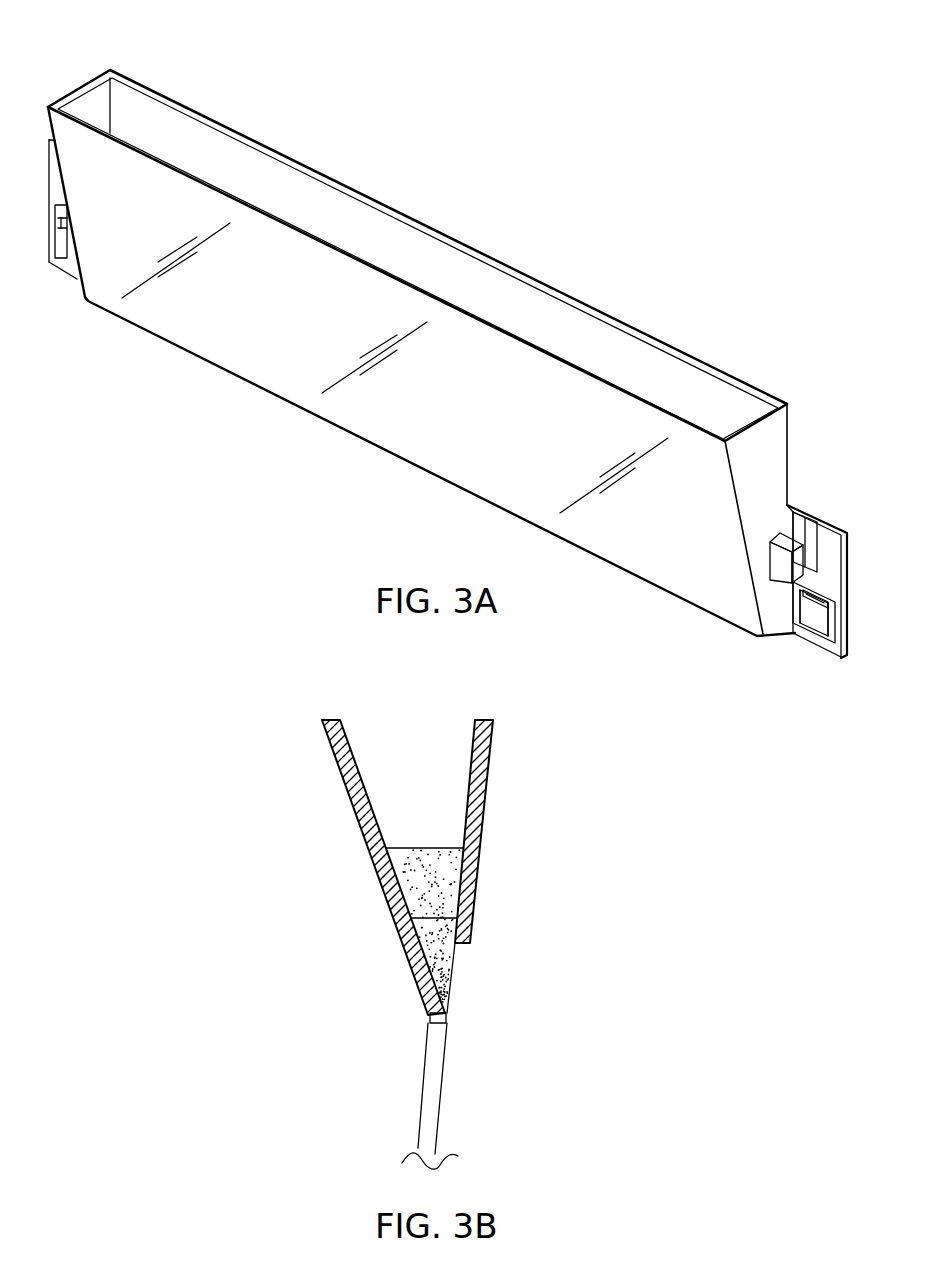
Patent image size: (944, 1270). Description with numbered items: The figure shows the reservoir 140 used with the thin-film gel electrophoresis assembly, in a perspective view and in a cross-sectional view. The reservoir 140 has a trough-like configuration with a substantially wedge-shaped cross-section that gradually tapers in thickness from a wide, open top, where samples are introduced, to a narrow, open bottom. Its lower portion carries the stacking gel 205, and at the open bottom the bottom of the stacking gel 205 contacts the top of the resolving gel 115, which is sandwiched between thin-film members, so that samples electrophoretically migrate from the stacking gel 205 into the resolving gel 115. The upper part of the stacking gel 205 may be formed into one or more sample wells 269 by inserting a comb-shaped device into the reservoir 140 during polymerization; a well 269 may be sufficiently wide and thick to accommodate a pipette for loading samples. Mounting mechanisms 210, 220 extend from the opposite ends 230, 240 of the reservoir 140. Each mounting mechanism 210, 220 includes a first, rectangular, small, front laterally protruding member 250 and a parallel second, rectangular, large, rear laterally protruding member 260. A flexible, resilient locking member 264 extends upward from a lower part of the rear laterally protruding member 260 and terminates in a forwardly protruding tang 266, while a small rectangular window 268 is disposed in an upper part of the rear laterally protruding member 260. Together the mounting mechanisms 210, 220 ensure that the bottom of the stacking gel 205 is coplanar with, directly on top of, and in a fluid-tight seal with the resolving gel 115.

In FIG. 3A, the reservoir 140 is at (156, 64).
In FIG. 3B, the reservoir 140 is at (492, 740).
In FIG. 3A, the end of reservoir 240 is at (778, 432).
In FIG. 3A, the mounting mechanism 210 is at (41, 332).
In FIG. 3A, the end of reservoir 230 is at (85, 298).
In FIG. 3A, the mounting mechanism 220 is at (783, 597).
In FIG. 3A, the rear laterally protruding member 260 is at (845, 532).
In FIG. 3A, the rectangular window 268 is at (807, 538).
In FIG. 3A, the front laterally protruding member 250 is at (780, 552).
In FIG. 3A, the locking member 264 is at (817, 620).
In FIG. 3A, the tang 266 is at (845, 640).
In FIG. 3B, the sample well 269 is at (433, 714).
In FIG. 3B, the stacking gel 205 is at (452, 970).
In FIG. 3B, the resolving gel 115 is at (433, 1075).